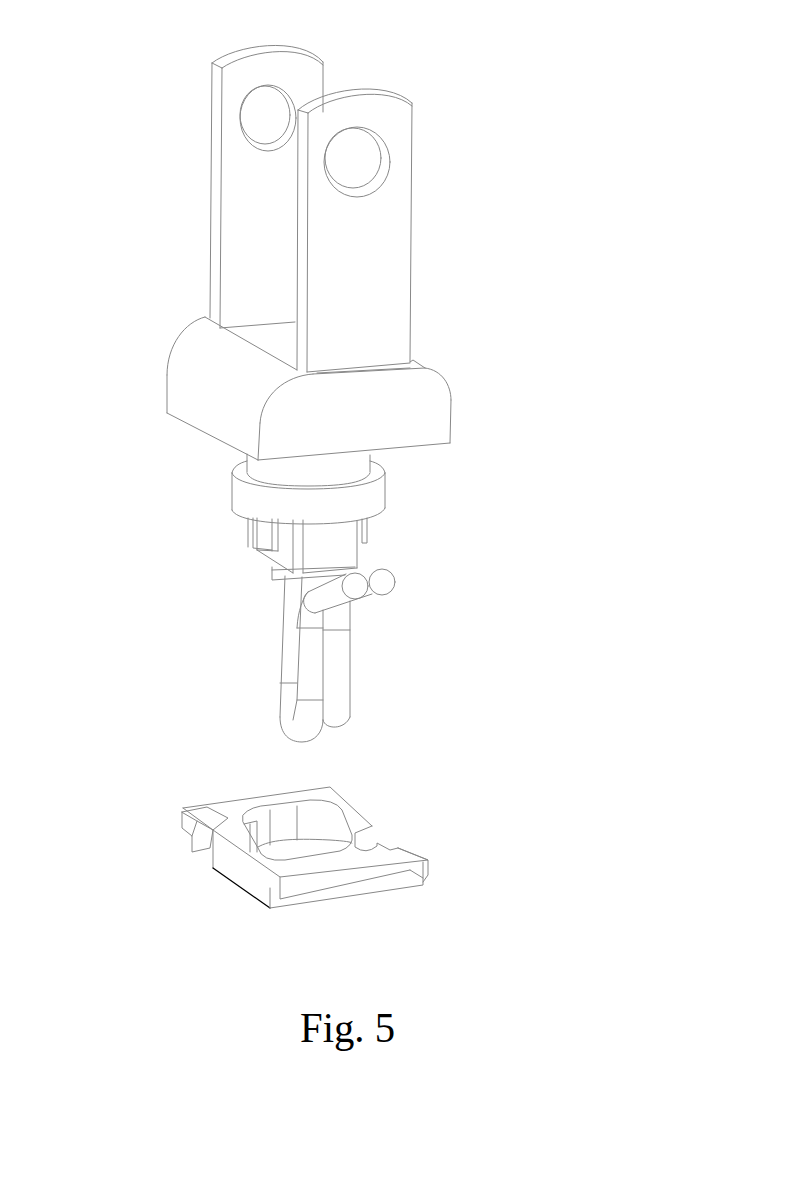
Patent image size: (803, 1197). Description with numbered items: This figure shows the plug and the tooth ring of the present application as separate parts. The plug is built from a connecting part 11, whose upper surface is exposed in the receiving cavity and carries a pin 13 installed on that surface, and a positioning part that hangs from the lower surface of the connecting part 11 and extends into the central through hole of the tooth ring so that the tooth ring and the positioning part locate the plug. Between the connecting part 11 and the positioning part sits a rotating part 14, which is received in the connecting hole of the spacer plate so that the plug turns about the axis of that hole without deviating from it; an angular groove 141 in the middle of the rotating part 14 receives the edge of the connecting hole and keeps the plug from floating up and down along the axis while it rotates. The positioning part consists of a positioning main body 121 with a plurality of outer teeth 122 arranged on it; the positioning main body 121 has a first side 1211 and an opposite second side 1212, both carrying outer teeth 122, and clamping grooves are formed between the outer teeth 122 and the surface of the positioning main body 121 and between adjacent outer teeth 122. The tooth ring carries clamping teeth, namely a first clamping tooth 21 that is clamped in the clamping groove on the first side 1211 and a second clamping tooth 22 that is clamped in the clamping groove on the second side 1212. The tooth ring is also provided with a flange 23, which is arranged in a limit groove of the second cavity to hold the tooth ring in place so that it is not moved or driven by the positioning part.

The connecting part 11 is at (418, 402).
The pin 13 is at (388, 245).
The rotating part 14 is at (248, 503).
The angular groove 141 is at (257, 468).
The positioning main body 121 is at (338, 548).
The outer teeth 122 is at (260, 532).
The first side 1211 is at (292, 558).
The second side 1212 is at (362, 560).
The first clamping tooth 21 is at (233, 830).
The second clamping tooth 22 is at (367, 840).
The flange 23 is at (183, 812).